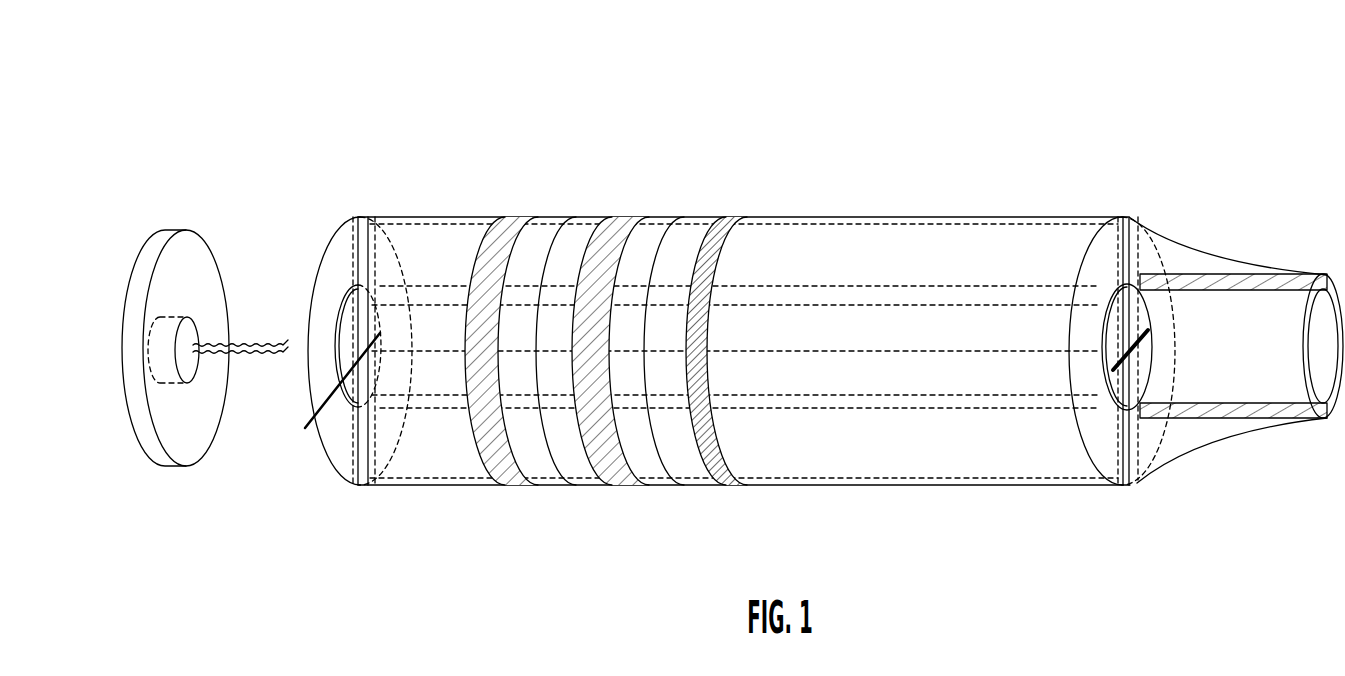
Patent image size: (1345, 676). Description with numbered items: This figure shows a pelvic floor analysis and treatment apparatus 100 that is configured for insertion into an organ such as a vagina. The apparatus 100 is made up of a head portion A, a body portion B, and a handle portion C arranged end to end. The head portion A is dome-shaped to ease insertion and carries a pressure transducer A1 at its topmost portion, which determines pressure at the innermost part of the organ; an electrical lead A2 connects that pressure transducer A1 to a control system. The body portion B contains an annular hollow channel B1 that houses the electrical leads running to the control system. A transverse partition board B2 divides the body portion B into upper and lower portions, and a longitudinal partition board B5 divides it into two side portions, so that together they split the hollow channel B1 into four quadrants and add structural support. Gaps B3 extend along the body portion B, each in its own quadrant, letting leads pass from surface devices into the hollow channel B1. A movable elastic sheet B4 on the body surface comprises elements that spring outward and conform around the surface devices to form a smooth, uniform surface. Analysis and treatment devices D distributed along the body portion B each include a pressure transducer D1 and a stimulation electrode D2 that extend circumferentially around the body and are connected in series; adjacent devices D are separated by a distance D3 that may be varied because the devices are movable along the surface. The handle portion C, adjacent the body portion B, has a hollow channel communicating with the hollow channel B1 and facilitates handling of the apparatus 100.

The pelvic floor analysis and treatment apparatus 100 is at (320, 130).
The head portion A is at (189, 386).
The pressure transducer A1 is at (162, 335).
The electrical lead A2 is at (243, 357).
The body portion B is at (1125, 213).
The hollow channel B1 is at (345, 408).
The transverse partition board B2 is at (356, 470).
The gap B3 is at (373, 452).
The movable elastic sheet B4 is at (740, 483).
The longitudinal partition board B5 is at (305, 428).
The handle portion C is at (1328, 175).
The analysis and treatment device D is at (507, 490).
The pressure transducer D1 is at (630, 473).
The stimulation electrode D2 is at (653, 473).
The distance D3 is at (573, 467).